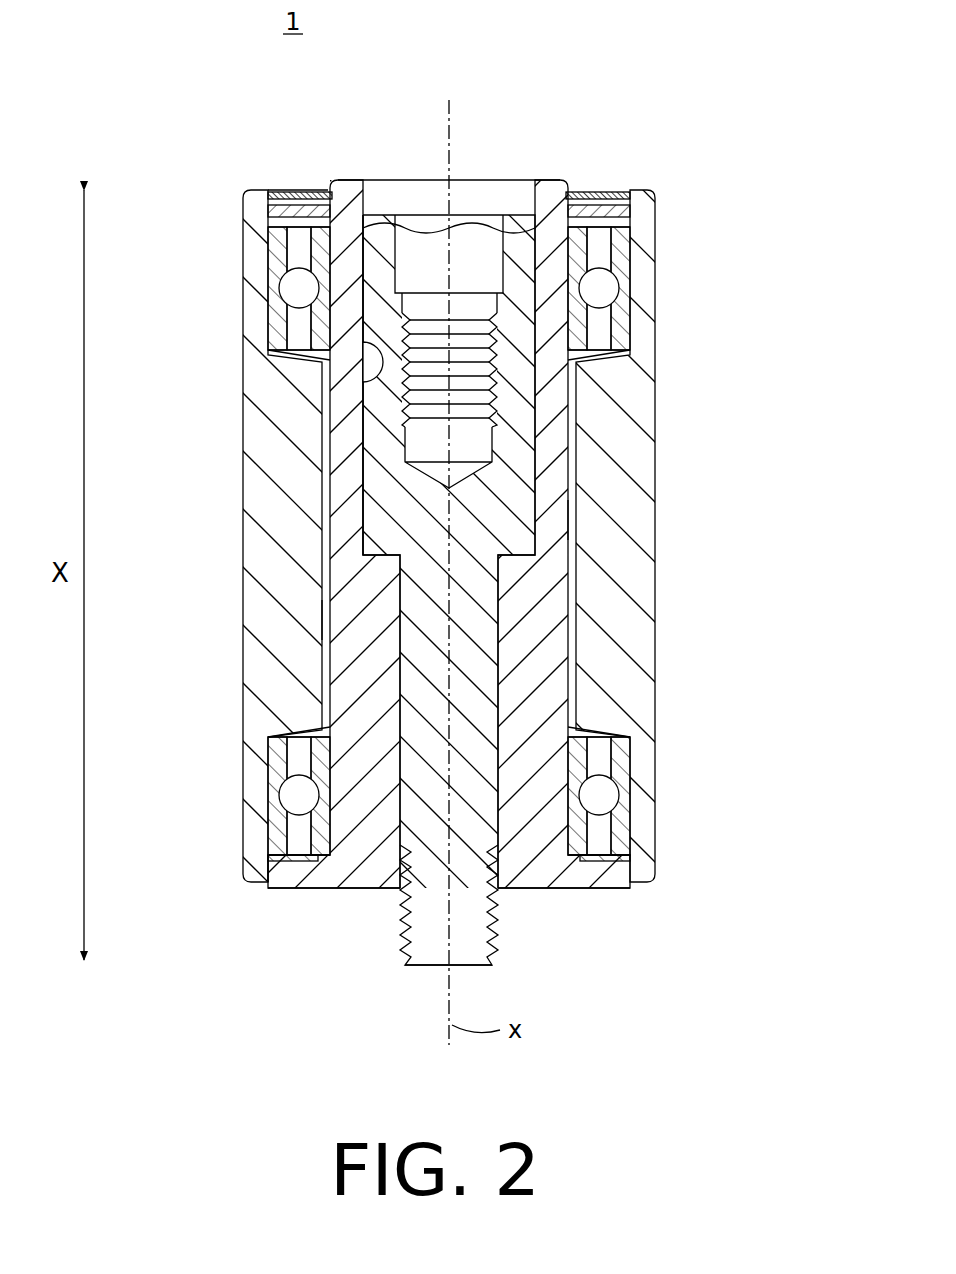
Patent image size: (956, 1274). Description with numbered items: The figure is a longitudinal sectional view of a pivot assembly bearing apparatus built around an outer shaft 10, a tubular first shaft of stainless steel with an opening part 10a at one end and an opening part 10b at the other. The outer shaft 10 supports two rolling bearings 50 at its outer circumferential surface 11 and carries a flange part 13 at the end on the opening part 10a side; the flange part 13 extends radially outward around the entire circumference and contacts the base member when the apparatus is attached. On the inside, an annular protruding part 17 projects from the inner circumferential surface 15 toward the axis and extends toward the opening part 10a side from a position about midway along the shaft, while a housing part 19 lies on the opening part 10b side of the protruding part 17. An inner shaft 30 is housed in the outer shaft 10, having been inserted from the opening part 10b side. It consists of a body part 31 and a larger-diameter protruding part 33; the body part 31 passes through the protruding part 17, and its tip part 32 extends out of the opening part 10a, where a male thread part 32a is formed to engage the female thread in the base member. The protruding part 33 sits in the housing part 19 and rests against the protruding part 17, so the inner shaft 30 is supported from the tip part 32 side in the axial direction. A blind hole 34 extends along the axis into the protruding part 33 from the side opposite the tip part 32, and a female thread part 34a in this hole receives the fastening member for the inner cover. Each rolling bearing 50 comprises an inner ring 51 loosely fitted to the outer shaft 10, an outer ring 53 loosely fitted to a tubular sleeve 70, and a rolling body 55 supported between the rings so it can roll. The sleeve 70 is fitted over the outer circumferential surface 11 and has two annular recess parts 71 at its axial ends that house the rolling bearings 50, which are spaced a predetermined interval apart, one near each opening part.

The outer shaft 10 is at (449, 627).
The opening part 10a is at (396, 878).
The opening part 10b is at (360, 185).
The outer circumferential surface 11 is at (318, 192).
The flange part 13 is at (283, 880).
The inner circumferential surface 15 is at (375, 372).
The protruding part 17 is at (380, 622).
The housing part 19 is at (550, 520).
The inner shaft 30 is at (508, 205).
The body part 31 is at (456, 554).
The tip part 32 is at (501, 917).
The male thread part 32a is at (490, 960).
The protruding part 33 is at (385, 435).
The blind hole 34 is at (574, 296).
The female thread part 34a is at (495, 378).
The rolling bearing 50 is at (543, 526).
The inner ring 51 is at (620, 199).
The outer ring 53 is at (615, 322).
The rolling body 55 is at (600, 288).
The sleeve 70 is at (232, 192).
The recess part 71 is at (283, 298).